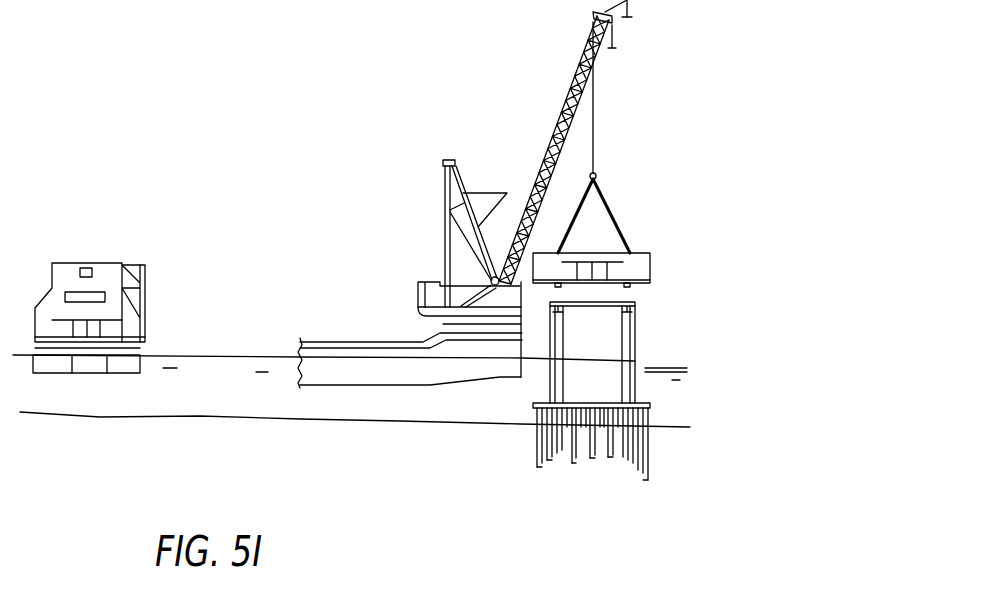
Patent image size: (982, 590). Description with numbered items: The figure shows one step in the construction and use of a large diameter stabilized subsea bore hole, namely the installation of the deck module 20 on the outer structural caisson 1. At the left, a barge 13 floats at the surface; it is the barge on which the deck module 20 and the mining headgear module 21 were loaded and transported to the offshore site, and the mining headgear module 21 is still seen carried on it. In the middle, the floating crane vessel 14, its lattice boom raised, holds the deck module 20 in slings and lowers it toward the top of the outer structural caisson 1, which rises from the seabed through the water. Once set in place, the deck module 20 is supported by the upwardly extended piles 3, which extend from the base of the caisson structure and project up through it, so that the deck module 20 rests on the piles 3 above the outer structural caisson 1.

The outer structural caisson 1 is at (635, 334).
The upwardly extended piles 3 is at (635, 393).
The barge 13 is at (118, 375).
The floating crane vessel 14 is at (338, 342).
The deck module 20 is at (650, 255).
The mining headgear module 21 is at (93, 263).